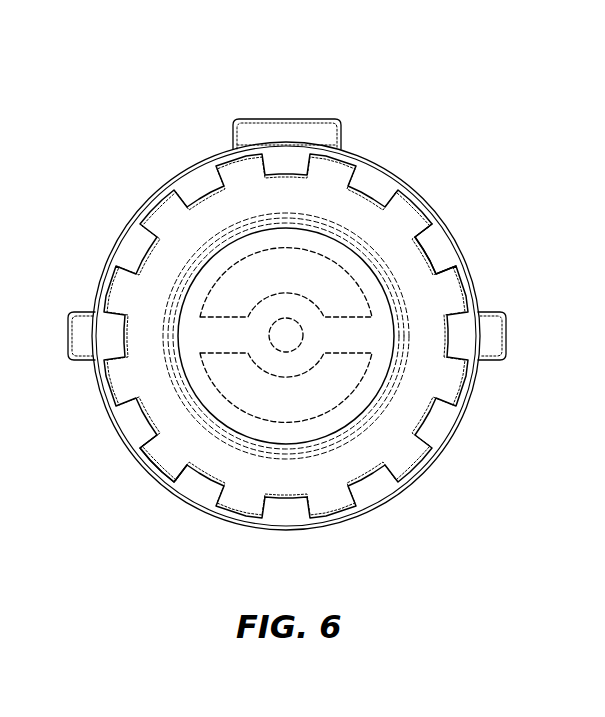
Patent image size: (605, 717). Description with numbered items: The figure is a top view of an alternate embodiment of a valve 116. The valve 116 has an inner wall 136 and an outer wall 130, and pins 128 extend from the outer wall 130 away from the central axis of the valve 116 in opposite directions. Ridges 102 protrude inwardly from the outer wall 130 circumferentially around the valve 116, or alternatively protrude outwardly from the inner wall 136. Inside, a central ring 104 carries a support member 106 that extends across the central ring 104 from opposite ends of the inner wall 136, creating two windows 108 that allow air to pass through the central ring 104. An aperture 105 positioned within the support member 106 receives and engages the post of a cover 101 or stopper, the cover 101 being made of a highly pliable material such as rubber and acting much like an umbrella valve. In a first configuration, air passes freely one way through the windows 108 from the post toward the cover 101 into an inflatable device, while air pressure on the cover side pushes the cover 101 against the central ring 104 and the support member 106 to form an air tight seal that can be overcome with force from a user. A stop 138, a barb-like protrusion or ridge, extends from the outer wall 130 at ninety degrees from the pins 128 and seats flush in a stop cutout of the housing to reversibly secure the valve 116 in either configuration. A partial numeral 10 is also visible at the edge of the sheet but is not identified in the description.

The closure cap 101 is at (212, 283).
The cap body 102 is at (427, 423).
The annular ring 104 is at (220, 232).
The central axis 105 is at (288, 338).
The recess 106 is at (233, 337).
The passages 108 is at (312, 278).
The closure assembly 116 is at (428, 66).
The side lugs 128 is at (500, 322).
The outer wall 130 is at (422, 192).
The engagement tab 136 is at (414, 266).
The top lug 138 is at (271, 132).
The container 10 is at (600, 377).